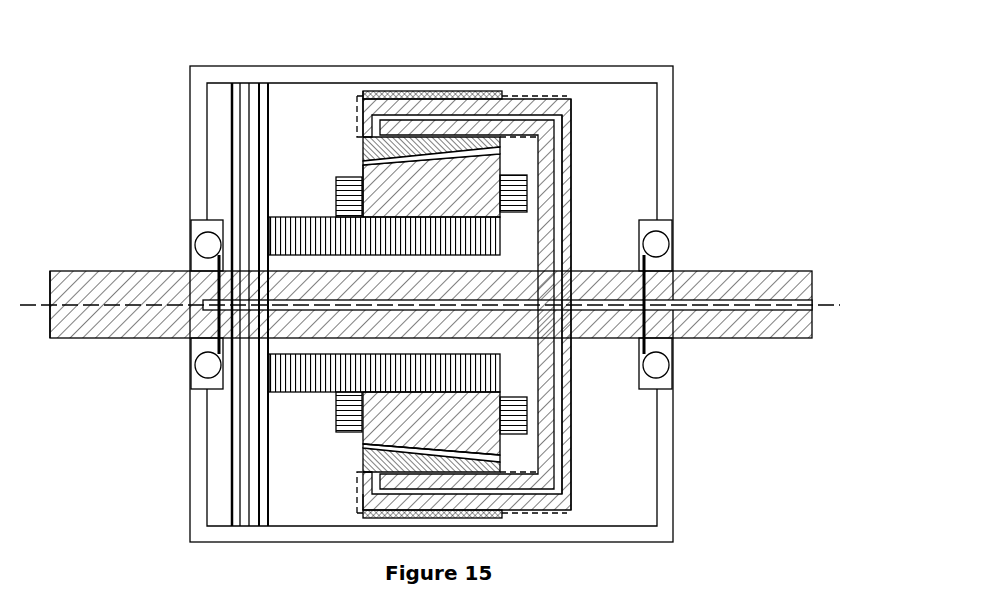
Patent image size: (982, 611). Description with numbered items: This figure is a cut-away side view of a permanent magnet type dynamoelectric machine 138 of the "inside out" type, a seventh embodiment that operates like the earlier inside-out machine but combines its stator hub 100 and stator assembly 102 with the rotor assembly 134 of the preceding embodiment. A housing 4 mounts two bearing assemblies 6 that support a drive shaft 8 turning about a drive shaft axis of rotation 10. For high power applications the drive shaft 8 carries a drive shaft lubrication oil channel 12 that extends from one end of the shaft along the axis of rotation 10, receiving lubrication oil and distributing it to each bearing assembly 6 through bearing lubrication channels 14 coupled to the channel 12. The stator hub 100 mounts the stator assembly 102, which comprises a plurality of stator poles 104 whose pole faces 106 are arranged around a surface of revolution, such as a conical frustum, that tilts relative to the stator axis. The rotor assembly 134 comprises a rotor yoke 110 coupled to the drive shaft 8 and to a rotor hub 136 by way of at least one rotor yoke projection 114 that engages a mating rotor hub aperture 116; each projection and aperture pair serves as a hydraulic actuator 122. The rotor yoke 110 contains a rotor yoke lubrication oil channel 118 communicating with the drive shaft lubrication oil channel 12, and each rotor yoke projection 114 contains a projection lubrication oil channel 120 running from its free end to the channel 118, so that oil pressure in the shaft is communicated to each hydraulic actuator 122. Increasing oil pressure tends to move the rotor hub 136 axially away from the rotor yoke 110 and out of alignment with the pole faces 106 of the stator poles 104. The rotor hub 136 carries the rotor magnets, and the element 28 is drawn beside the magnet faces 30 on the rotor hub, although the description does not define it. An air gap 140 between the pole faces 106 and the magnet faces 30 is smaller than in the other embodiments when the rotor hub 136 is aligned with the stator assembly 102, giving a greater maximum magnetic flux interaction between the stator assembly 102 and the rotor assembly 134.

The dynamoelectric machine 138 is at (122, 135).
The housing 4 is at (622, 85).
The bearing assembly 6 is at (192, 222).
The drive shaft 8 is at (741, 270).
The drive shaft axis of rotation 10 is at (50, 340).
The drive shaft lubrication oil channel 12 is at (813, 303).
The bearing lubrication channel 14 is at (224, 262).
The stator hub 100 is at (230, 473).
The stator pole 104 is at (343, 213).
The air gap 140 is at (500, 150).
The magnet face 30 is at (373, 163).
The wedge strip 28 is at (362, 161).
The pole face 106 is at (352, 462).
The rotor hub aperture 116 is at (380, 447).
The stator assembly 102 is at (348, 165).
The rotor yoke lubrication oil channel 118 is at (565, 165).
The projection lubrication oil channel 120 is at (518, 110).
The rotor yoke 110 is at (572, 118).
The rotor assembly 134 is at (580, 466).
The rotor yoke projection 114 is at (363, 503).
The hydraulic actuator 122 is at (437, 92).
The rotor hub 136 is at (370, 83).